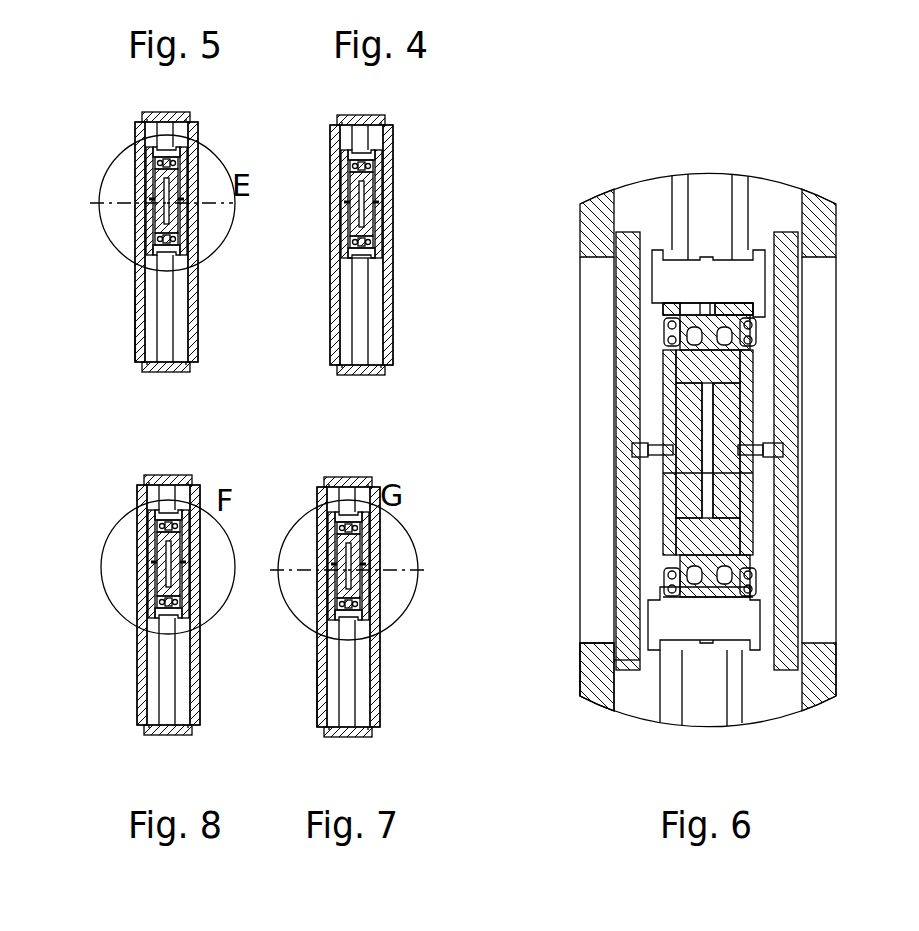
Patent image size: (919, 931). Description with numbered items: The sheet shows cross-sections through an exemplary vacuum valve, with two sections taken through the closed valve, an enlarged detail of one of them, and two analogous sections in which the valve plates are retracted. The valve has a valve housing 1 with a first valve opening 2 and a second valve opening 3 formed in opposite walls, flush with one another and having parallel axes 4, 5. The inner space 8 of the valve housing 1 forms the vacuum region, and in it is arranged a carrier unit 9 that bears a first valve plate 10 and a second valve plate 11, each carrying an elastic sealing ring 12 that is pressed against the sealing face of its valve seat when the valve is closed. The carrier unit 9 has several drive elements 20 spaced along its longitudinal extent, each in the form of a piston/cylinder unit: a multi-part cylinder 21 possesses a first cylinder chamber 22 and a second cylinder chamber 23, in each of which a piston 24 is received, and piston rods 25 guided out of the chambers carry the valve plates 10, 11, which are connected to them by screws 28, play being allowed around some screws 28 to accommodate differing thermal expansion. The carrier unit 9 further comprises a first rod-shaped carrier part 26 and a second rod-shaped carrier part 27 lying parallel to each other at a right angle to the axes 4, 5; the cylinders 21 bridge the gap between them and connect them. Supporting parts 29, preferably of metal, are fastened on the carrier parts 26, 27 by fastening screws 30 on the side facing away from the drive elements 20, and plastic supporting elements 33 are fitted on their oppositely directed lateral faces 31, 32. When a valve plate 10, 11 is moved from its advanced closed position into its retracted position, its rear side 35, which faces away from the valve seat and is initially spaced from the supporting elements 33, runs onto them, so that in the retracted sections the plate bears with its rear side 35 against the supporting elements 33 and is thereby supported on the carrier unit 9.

In FIG. 5, the valve housing 1 is at (138, 303).
In FIG. 4, the valve housing 1 is at (390, 317).
In FIG. 8, the valve housing 1 is at (140, 657).
In FIG. 7, the valve housing 1 is at (373, 680).
In FIG. 6, the valve housing 1 is at (812, 205).
In FIG. 5, the first valve opening 2 is at (147, 182).
In FIG. 4, the first valve opening 2 is at (333, 205).
In FIG. 8, the first valve opening 2 is at (143, 537).
In FIG. 6, the first valve opening 2 is at (598, 268).
In FIG. 5, the second valve opening 3 is at (192, 175).
In FIG. 4, the second valve opening 3 is at (388, 207).
In FIG. 8, the second valve opening 3 is at (195, 558).
In FIG. 6, the second valve opening 3 is at (818, 285).
In FIG. 5, the axis 4 is at (153, 213).
In FIG. 7, the axis 4 is at (305, 570).
In FIG. 5, the axis 5 is at (208, 203).
In FIG. 7, the axis 5 is at (393, 570).
In FIG. 5, the inner space 8 is at (152, 332).
In FIG. 4, the inner space 8 is at (378, 128).
In FIG. 8, the inner space 8 is at (152, 690).
In FIG. 6, the inner space 8 is at (765, 190).
In FIG. 6, the carrier unit 9 is at (650, 572).
In FIG. 5, the first valve plate 10 is at (137, 297).
In FIG. 7, the first valve plate 10 is at (330, 600).
In FIG. 6, the first valve plate 10 is at (622, 568).
In FIG. 5, the second valve plate 11 is at (185, 233).
In FIG. 7, the second valve plate 11 is at (370, 540).
In FIG. 6, the second valve plate 11 is at (800, 575).
In FIG. 6, the elastic sealing ring 12 is at (606, 226).
In FIG. 5, the drive element 20 is at (158, 218).
In FIG. 4, the drive element 20 is at (372, 188).
In FIG. 6, the drive element 20 is at (752, 372).
In FIG. 6, the cylinder 21 is at (683, 560).
In FIG. 6, the first cylinder chamber 22 is at (692, 398).
In FIG. 6, the second cylinder chamber 23 is at (718, 402).
In FIG. 6, the piston 24 is at (683, 483).
In FIG. 6, the piston rod 25 is at (650, 462).
In FIG. 6, the first rod-shaped carrier part 26 is at (672, 318).
In FIG. 6, the second rod-shaped carrier part 27 is at (700, 572).
In FIG. 6, the screw 28 is at (655, 450).
In FIG. 5, the supporting part 29 is at (167, 162).
In FIG. 4, the supporting part 29 is at (362, 160).
In FIG. 8, the supporting part 29 is at (165, 607).
In FIG. 6, the supporting part 29 is at (668, 272).
In FIG. 4, the fastening screw 30 is at (358, 247).
In FIG. 6, the lateral face 31 is at (634, 255).
In FIG. 6, the lateral face 32 is at (768, 262).
In FIG. 6, the supporting element 33 is at (660, 588).
In FIG. 6, the rear side 35 is at (660, 563).